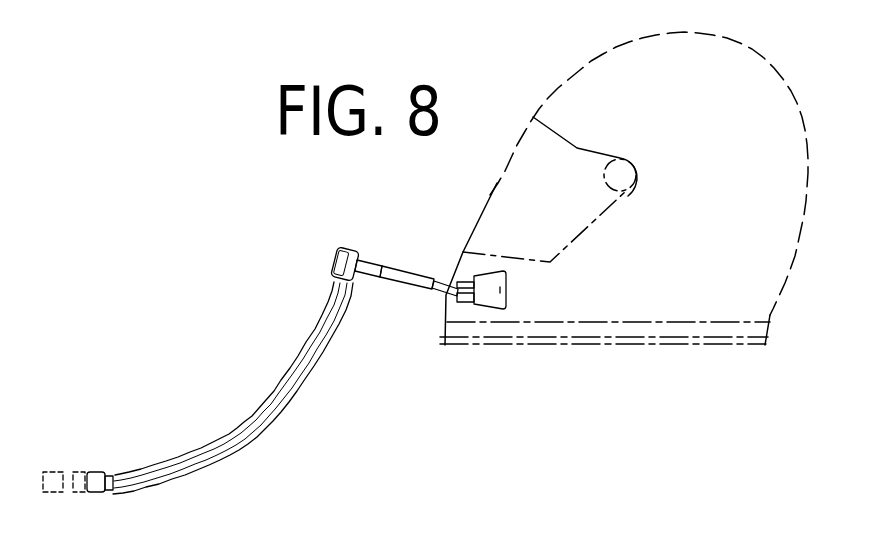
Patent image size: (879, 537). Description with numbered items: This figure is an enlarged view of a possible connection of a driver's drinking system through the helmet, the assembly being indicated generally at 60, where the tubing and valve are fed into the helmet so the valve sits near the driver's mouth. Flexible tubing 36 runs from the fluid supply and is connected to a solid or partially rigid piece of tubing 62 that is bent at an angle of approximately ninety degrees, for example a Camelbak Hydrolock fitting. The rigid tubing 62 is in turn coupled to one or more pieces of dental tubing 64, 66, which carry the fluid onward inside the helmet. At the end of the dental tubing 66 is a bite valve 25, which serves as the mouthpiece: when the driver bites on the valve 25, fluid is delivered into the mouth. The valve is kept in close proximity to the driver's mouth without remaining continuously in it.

The bite valve 25 is at (508, 290).
The tubing 36 is at (285, 380).
The connection through the helmet 60 is at (366, 335).
The rigid tubing 62 is at (333, 262).
The dental tubing 64 is at (403, 272).
The dental tubing 66 is at (442, 298).